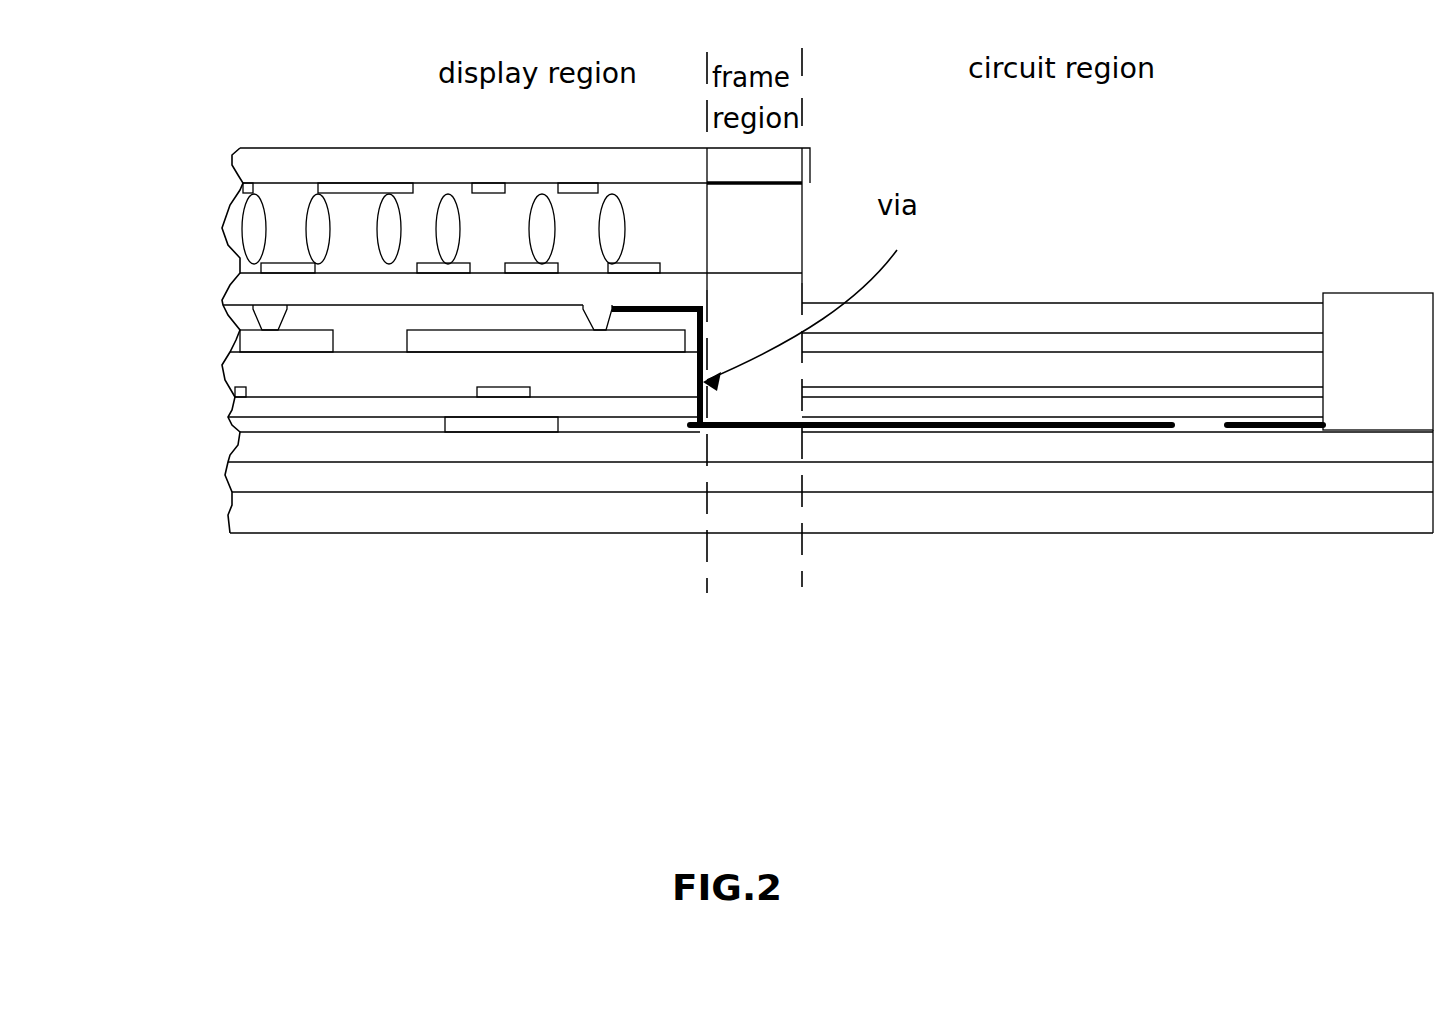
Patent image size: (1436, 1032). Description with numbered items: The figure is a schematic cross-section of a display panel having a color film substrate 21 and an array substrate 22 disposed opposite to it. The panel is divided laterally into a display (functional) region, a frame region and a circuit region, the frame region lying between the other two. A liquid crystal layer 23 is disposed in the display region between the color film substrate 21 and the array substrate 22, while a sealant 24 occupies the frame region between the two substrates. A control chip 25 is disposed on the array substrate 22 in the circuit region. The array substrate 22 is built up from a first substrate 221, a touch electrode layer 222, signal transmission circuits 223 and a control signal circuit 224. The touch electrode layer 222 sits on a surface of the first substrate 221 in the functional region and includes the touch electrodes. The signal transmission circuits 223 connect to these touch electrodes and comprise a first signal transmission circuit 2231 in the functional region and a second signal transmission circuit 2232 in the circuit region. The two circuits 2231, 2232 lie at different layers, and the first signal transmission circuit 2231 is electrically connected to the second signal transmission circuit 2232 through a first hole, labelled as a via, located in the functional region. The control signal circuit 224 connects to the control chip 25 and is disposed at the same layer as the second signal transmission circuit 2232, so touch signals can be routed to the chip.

The color film substrate 21 is at (273, 148).
The array substrate 22 is at (263, 535).
The liquid crystal layer 23 is at (262, 233).
The sealant 24 is at (763, 228).
The control chip 25 is at (1362, 298).
The first substrate 221 is at (240, 509).
The touch electrode layer 222 is at (255, 344).
The signal transmission circuits 223 is at (862, 544).
The first signal transmission circuit 2231 is at (673, 330).
The second signal transmission circuit 2232 is at (936, 446).
The control signal circuit 224 is at (1265, 445).